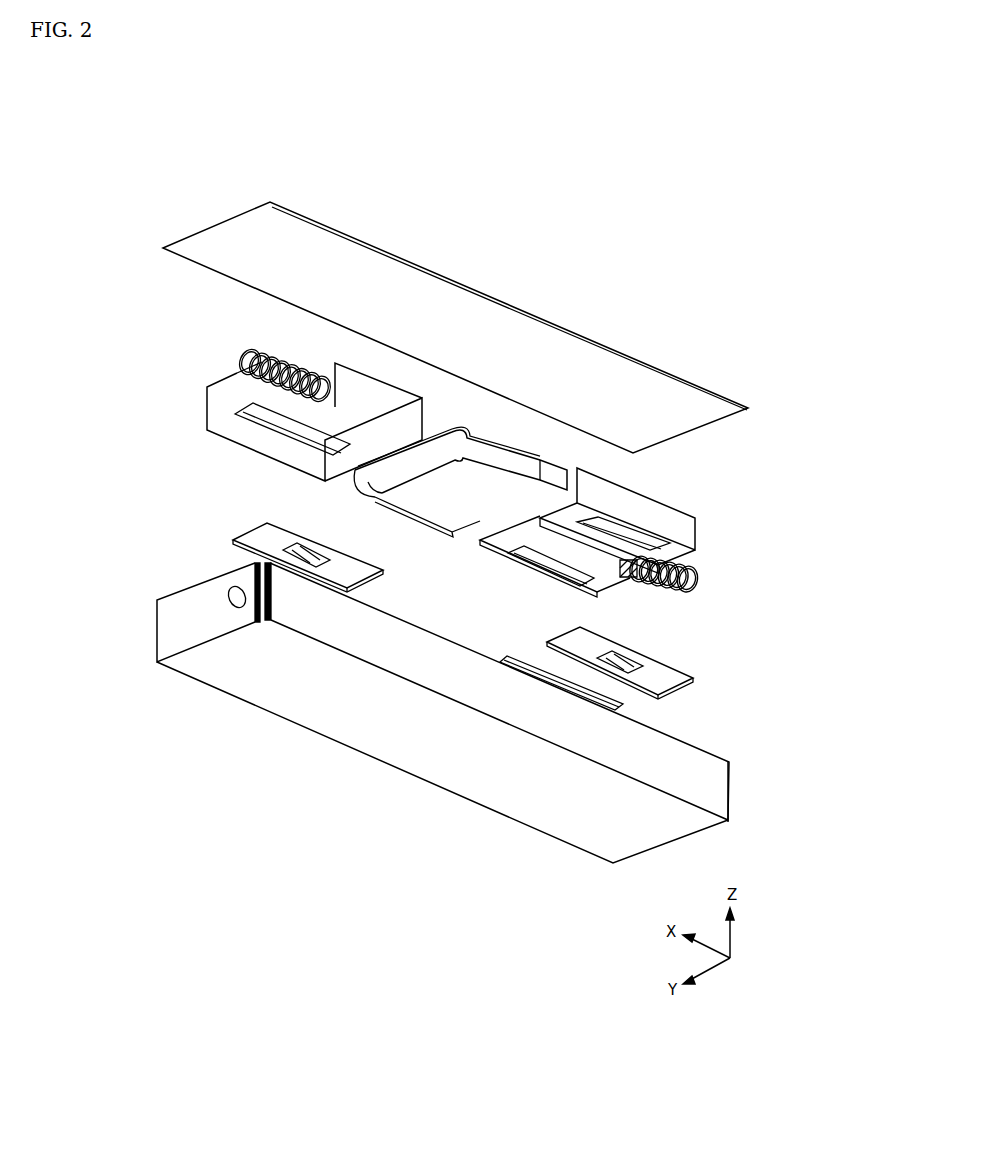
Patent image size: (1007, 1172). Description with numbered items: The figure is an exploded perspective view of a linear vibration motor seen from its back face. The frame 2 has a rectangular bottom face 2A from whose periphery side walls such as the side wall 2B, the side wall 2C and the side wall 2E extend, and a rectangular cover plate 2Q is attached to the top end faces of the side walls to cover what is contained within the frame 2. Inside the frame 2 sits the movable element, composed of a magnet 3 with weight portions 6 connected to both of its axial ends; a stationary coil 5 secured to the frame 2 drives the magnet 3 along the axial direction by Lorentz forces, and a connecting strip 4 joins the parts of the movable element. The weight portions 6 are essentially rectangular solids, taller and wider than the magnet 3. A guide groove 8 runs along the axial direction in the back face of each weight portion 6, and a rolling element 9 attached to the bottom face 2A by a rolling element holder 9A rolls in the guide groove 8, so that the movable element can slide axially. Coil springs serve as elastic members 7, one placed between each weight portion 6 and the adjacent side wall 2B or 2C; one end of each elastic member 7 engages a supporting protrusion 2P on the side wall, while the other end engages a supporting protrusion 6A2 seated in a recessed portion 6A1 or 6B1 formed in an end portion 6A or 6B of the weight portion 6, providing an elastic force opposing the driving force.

The frame 2 is at (445, 697).
The bottom face 2A is at (214, 688).
The side wall 2B is at (162, 622).
The side wall 2C is at (730, 798).
The side wall 2E is at (678, 748).
The supporting protrusion 2P is at (238, 584).
The cover plate 2Q is at (688, 384).
The magnet 3 is at (493, 530).
The connecting strip 4 is at (430, 438).
The coil 5 is at (450, 529).
The weight portion 6 is at (454, 458).
The end portion 6A is at (207, 404).
The recessed portion 6A1 is at (312, 364).
The supporting protrusion 6A2 is at (266, 344).
The end portion 6B is at (700, 541).
The recessed portion 6B1 is at (620, 578).
The elastic member 7 is at (238, 354).
The guide groove 8 is at (283, 420).
The rolling element 9 is at (303, 555).
The rolling element holder 9A is at (384, 570).